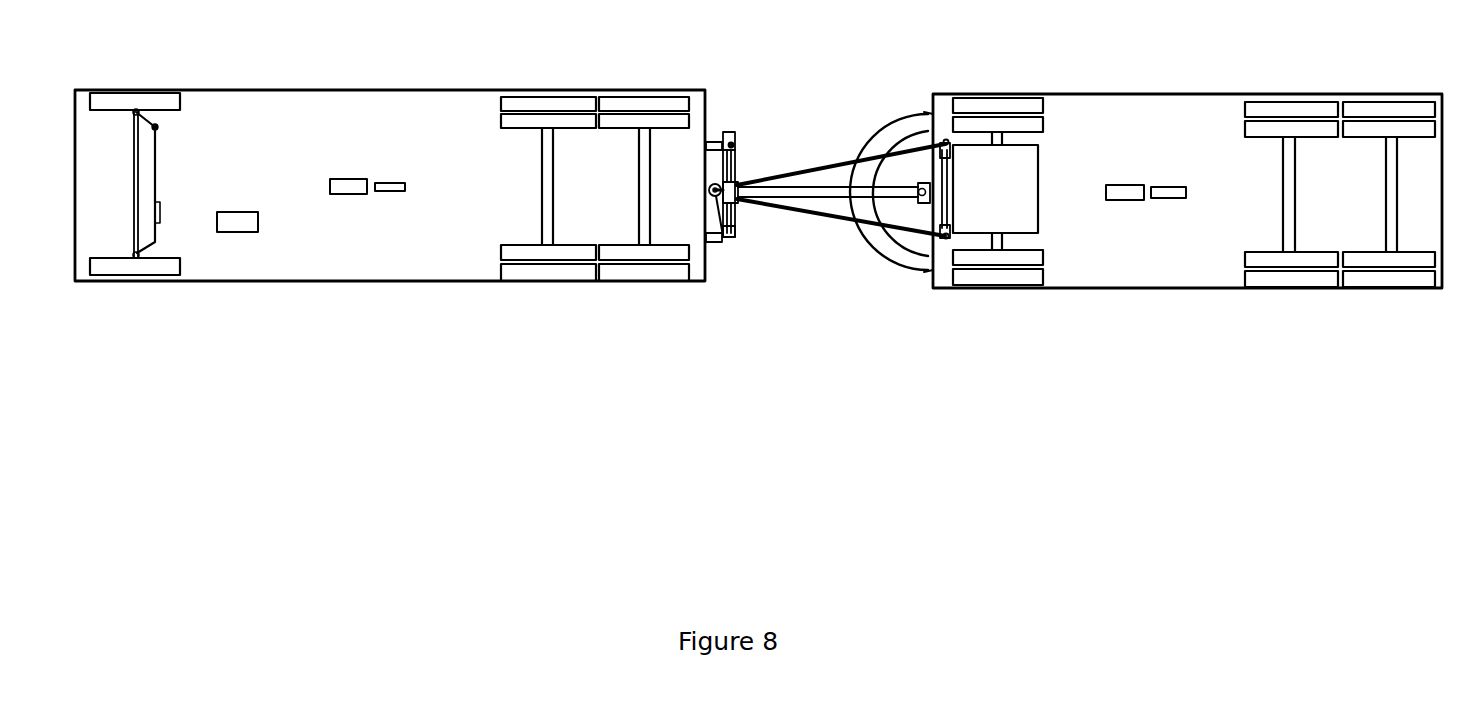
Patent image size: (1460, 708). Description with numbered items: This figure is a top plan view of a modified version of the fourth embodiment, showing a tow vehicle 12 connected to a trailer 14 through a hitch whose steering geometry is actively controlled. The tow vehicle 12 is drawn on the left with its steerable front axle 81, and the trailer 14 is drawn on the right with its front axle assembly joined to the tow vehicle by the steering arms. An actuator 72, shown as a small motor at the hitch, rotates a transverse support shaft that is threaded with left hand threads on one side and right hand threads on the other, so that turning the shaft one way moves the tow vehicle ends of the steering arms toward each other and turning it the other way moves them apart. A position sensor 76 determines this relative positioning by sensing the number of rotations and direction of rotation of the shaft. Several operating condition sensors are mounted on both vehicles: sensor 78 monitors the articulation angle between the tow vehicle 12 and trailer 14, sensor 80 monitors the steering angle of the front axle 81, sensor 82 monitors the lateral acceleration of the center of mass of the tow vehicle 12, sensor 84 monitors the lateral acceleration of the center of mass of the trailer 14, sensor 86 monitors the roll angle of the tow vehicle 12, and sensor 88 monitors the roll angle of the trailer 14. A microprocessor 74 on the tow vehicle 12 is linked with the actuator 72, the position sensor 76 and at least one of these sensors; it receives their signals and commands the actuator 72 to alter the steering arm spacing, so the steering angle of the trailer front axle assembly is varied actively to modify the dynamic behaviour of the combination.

The tow vehicle 12 is at (312, 103).
The trailer 14 is at (1125, 110).
The actuator 72 is at (737, 133).
The microprocessor 74 is at (237, 220).
The position sensor 76 is at (737, 236).
The operating condition sensor 78 is at (723, 240).
The operating condition sensor 80 is at (160, 208).
The front axle 81 is at (137, 187).
The operating condition sensor 82 is at (350, 187).
The operating condition sensor 84 is at (1128, 193).
The operating condition sensor 86 is at (397, 187).
The operating condition sensor 88 is at (1172, 192).